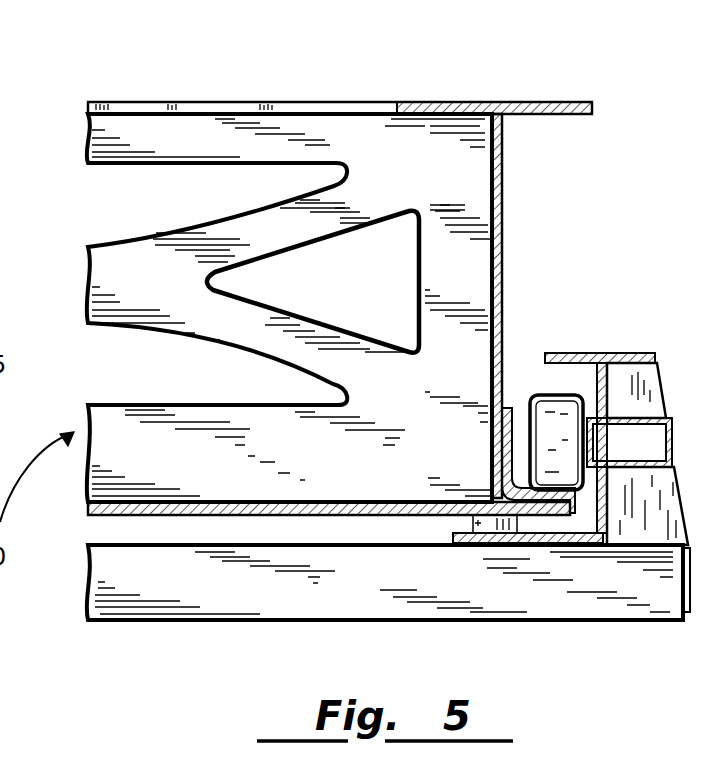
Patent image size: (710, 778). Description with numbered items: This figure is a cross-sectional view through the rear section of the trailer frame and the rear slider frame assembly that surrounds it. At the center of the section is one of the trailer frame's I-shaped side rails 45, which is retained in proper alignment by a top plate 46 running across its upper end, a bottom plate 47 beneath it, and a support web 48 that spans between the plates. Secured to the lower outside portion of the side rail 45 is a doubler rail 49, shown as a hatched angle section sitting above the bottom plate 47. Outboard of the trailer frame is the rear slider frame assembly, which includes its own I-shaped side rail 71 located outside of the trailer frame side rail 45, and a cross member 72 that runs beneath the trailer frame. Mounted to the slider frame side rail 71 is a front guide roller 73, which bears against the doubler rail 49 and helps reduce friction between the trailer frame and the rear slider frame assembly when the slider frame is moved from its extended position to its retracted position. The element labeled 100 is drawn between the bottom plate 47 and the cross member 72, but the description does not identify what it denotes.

The side rail 45 is at (503, 248).
The top plate 46 is at (292, 102).
The bottom plate 47 is at (275, 515).
The support web 48 is at (289, 308).
The doubler rail 49 is at (512, 398).
The side rail 71 is at (606, 348).
The cross member 72 is at (600, 620).
The front guide roller 73 is at (629, 442).
The spacer block 100 is at (455, 518).